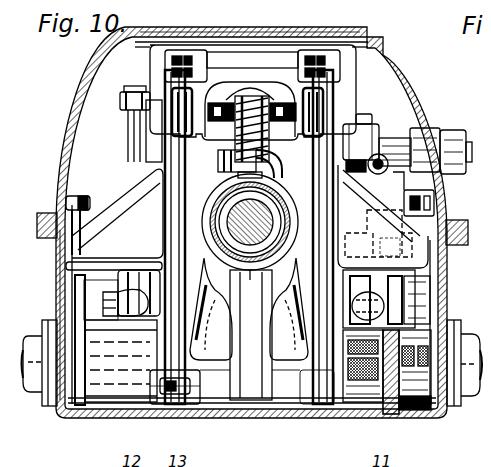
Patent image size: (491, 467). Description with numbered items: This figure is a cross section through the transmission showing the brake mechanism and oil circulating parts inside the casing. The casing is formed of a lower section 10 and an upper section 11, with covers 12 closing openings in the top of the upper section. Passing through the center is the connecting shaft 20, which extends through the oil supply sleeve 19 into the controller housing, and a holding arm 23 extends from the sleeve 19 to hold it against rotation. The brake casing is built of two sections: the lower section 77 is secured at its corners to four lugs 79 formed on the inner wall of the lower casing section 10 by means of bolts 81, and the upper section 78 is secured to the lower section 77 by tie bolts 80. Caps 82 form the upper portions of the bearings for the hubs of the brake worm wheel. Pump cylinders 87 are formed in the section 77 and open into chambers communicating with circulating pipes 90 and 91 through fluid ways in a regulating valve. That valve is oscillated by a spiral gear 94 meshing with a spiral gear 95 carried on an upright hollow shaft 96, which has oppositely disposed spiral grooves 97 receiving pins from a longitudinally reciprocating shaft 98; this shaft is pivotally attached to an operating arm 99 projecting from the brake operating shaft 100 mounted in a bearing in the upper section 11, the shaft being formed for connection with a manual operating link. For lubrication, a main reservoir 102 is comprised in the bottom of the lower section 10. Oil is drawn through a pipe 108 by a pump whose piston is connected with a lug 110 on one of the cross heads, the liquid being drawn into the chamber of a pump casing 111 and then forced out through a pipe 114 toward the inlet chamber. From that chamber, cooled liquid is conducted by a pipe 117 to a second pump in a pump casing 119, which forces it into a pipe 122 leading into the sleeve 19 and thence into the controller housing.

The lower section of transmission casing 10 is at (60, 303).
The upper section of transmission casing 11 is at (82, 107).
The covers 12 is at (153, 30).
The oil supply sleeve 19 is at (249, 309).
The connecting shaft 20 is at (268, 212).
The holding arm 23 is at (231, 373).
The brake casing section 77 is at (123, 210).
The brake casing section 78 is at (158, 127).
The lugs 79 is at (76, 284).
The tie bolts 80 is at (338, 58).
The bolts 81 is at (64, 188).
The caps 82 is at (218, 130).
The pump cylinders 87 is at (114, 279).
The circulating pipe 90 is at (465, 377).
The circulating pipe 91 is at (33, 394).
The spiral gear 94 is at (380, 404).
The spiral gear 95 is at (424, 412).
The upright hollow shaft 96 is at (396, 272).
The spiral grooves 97 is at (402, 294).
The longitudinally reciprocating shaft 98 is at (396, 204).
The operating arm 99 is at (390, 207).
The brake operating shaft 100 is at (474, 143).
The main reservoir 102 is at (136, 406).
The pipe 108 is at (404, 312).
The lug 110 is at (353, 126).
The pump casing 111 is at (358, 272).
The pipe 114 is at (387, 150).
The pipe 117 is at (109, 291).
The pump casing 119 is at (153, 310).
The pipe 122 is at (230, 165).